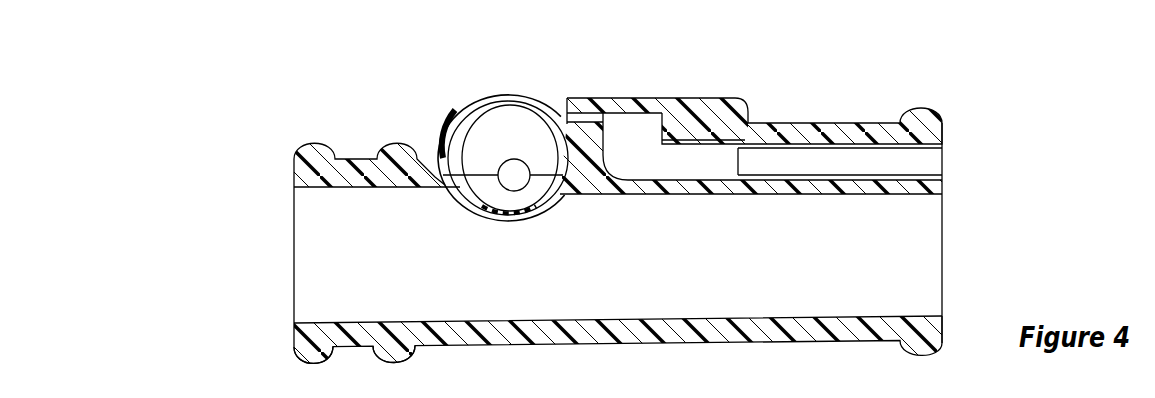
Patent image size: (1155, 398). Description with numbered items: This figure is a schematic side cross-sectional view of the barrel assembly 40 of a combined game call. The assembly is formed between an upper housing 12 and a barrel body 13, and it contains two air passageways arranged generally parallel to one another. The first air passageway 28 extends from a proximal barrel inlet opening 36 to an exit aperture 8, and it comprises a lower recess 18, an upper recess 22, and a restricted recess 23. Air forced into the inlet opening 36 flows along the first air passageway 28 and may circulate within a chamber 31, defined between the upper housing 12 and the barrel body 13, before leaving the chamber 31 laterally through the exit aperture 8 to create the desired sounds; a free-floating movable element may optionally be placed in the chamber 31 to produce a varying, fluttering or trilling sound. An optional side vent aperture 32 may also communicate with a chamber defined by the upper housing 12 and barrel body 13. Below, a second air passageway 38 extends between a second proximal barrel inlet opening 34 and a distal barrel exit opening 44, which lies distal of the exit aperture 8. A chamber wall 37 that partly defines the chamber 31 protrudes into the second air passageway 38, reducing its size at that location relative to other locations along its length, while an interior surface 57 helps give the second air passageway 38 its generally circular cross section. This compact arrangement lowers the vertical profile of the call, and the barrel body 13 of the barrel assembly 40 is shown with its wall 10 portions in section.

The exit aperture 8 is at (552, 101).
The housing 10 is at (618, 357).
The upper housing 12 is at (951, 117).
The barrel body 13 is at (290, 345).
The lower recess 18 is at (792, 162).
The upper recess 22 is at (695, 160).
The restricted recess 23 is at (598, 118).
The first air passageway 28 is at (820, 101).
The chamber 31 is at (506, 141).
The side vent aperture 32 is at (491, 162).
The proximal barrel inlet opening 34 is at (928, 257).
The proximal barrel inlet opening 36 is at (928, 162).
The chamber wall 37 is at (492, 217).
The second air passageway 38 is at (606, 266).
The barrel assembly 40 is at (969, 72).
The distal barrel exit opening 44 is at (290, 264).
The interior surface 57 is at (348, 317).